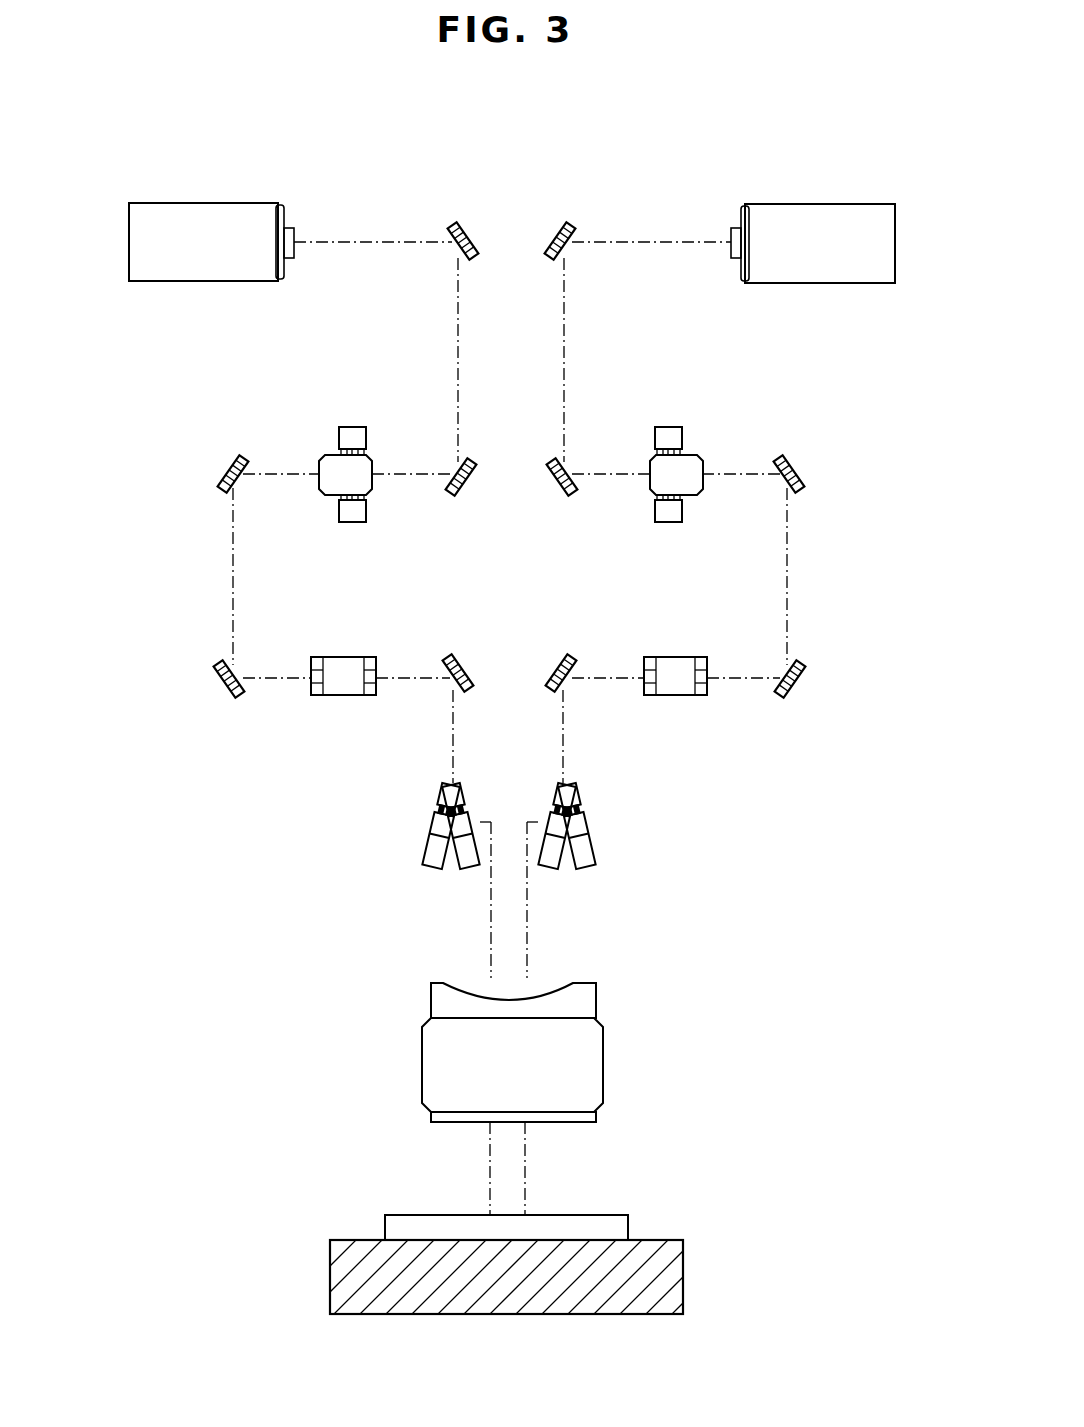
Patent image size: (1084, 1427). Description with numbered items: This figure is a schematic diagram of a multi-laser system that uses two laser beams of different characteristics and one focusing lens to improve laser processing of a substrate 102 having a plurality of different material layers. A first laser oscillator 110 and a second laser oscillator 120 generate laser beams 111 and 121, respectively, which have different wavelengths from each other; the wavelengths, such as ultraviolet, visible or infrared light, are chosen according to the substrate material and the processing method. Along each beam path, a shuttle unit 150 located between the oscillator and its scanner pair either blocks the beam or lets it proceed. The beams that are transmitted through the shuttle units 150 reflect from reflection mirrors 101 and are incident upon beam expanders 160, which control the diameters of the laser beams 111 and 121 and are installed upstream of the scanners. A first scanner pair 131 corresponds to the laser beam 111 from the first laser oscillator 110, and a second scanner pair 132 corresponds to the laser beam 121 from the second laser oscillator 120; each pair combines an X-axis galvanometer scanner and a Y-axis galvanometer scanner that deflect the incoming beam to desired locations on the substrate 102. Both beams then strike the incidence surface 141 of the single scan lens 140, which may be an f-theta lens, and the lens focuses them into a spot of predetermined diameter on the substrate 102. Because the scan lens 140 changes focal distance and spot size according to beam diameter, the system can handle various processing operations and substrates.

The first laser oscillator 110 is at (203, 228).
The second laser oscillator 120 is at (820, 228).
The laser beam 111 is at (383, 242).
The laser beam 121 is at (642, 242).
The reflection mirror 101 is at (470, 480).
The shuttle unit 150 is at (337, 455).
The beam expander 160 is at (344, 690).
The first scanner pair 131 is at (430, 832).
The second scanner pair 132 is at (588, 832).
The incidence surface 141 is at (545, 993).
The single scan lens 140 is at (593, 1065).
The substrate 102 is at (620, 1222).